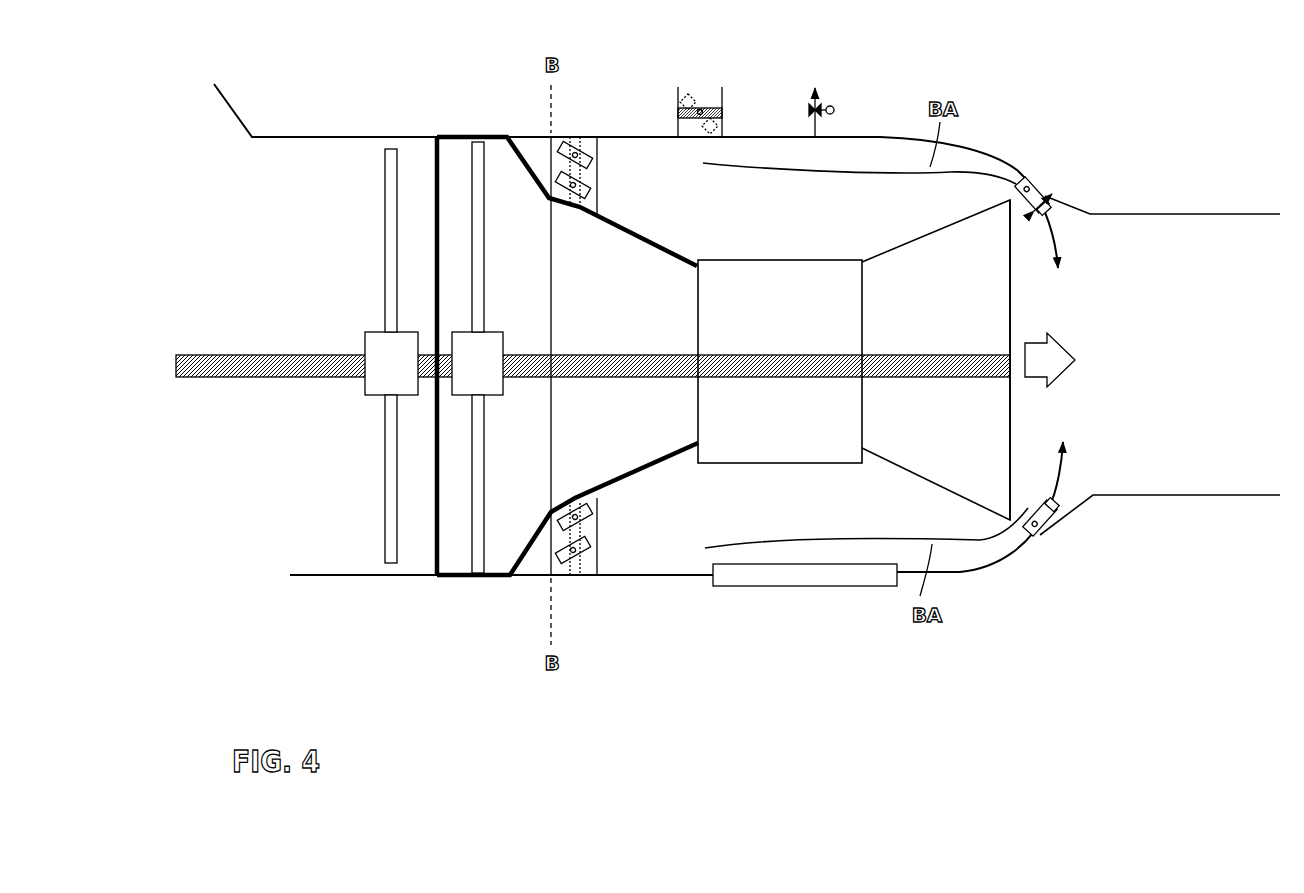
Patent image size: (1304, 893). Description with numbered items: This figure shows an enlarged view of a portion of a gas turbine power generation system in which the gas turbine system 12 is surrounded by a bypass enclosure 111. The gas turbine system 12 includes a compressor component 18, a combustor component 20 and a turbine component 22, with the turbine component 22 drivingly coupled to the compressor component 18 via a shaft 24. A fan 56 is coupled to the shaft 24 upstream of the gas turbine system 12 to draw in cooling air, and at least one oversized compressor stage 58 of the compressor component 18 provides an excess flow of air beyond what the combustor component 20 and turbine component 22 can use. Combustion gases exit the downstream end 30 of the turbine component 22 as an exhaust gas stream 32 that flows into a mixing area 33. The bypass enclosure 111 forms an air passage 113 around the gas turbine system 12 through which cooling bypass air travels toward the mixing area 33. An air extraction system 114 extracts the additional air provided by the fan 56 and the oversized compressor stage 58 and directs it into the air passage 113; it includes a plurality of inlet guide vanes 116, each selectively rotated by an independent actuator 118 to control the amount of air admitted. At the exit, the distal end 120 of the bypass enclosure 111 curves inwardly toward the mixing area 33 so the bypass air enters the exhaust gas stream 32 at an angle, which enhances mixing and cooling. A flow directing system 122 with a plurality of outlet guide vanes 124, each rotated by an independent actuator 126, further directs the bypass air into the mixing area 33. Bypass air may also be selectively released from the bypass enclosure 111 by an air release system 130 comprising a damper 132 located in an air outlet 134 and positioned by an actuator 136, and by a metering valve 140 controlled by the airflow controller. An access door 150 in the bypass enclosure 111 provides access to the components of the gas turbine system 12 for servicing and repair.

The gas turbine system 12 is at (723, 476).
The compressor component 18 is at (584, 322).
The combustor component 20 is at (767, 322).
The turbine component 22 is at (924, 317).
The shaft 24 is at (302, 353).
The downstream end 30 is at (1010, 430).
The exhaust gas stream 32 is at (1032, 371).
The mixing area 33 is at (1126, 367).
The fan 56 is at (383, 537).
The oversized compressor stage 58 is at (472, 543).
The bypass enclosure 111 is at (879, 139).
The air passage 113 is at (774, 228).
The air extraction system 114 is at (600, 212).
The inlet guide vanes 116 is at (593, 160).
The actuator 118 is at (587, 187).
The distal end 120 is at (1006, 146).
The flow directing system 122 is at (1063, 213).
The outlet guide vanes 124 is at (1037, 186).
The actuator 126 is at (1055, 184).
The air release system 130 is at (731, 111).
The damper 132 is at (678, 112).
The air outlet 134 is at (686, 81).
The actuator 136 is at (701, 110).
The metering valve 140 is at (818, 107).
The access door 150 is at (813, 588).